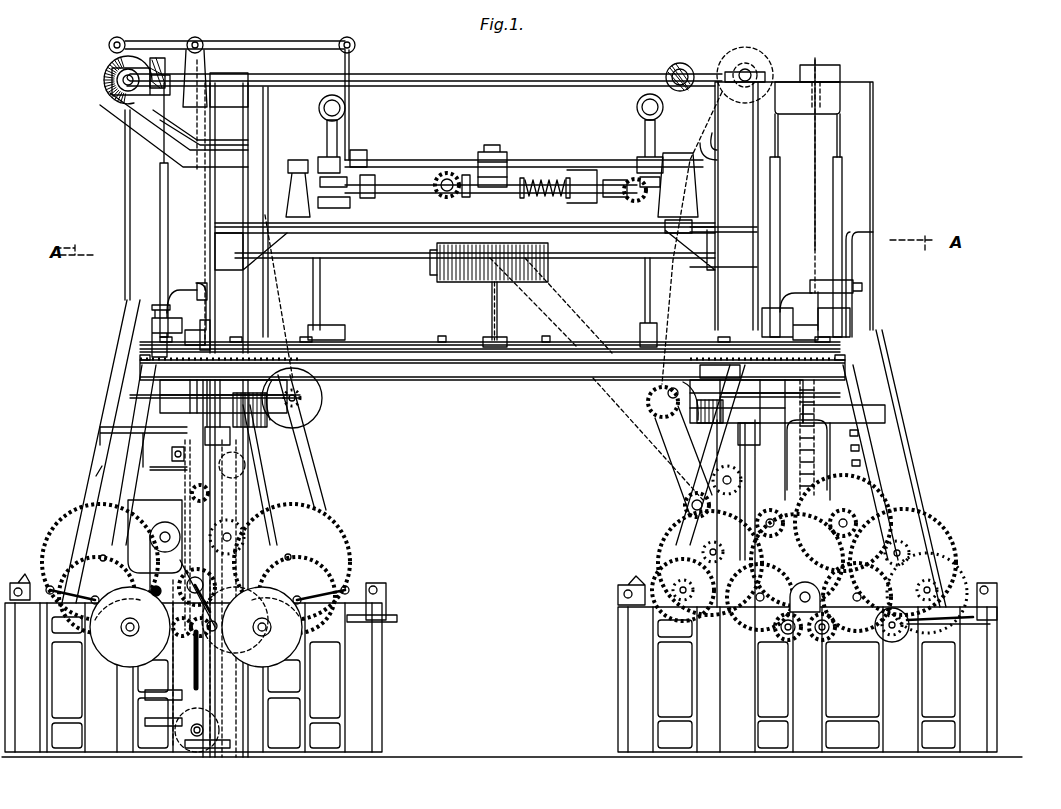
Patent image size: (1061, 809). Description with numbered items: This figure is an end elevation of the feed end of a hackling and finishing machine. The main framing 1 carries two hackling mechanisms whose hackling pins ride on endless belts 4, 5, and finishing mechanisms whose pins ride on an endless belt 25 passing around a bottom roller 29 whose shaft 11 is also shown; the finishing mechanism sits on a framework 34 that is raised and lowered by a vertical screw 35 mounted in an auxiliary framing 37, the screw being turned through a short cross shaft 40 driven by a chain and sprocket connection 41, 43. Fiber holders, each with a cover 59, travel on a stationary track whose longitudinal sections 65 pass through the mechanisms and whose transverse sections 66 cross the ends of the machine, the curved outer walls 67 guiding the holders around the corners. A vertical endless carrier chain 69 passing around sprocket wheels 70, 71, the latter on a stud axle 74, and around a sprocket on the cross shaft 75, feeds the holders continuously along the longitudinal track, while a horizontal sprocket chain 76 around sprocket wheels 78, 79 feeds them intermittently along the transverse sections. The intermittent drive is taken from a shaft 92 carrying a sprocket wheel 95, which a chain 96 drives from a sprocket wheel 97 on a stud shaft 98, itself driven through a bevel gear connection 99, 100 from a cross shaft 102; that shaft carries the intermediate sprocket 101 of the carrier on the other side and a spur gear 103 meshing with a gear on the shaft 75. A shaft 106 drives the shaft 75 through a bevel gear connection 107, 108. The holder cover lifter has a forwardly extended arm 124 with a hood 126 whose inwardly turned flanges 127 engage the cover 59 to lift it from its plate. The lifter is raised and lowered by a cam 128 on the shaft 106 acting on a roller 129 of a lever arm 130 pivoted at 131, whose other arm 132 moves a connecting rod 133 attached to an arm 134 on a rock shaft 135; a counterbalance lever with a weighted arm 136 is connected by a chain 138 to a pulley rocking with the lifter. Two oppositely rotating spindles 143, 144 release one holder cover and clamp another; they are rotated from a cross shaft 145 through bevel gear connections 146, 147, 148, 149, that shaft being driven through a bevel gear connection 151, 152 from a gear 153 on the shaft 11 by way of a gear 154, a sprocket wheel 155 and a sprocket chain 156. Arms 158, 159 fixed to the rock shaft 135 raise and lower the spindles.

The main framing 1 is at (97, 474).
The endless belt 4 is at (172, 453).
The endless belt 5 is at (860, 440).
The shaft of bottom roller 11 is at (771, 518).
The endless belt 25 is at (202, 535).
The bottom roller 29 is at (153, 532).
The framework 34 is at (165, 695).
The vertical screw 35 is at (200, 660).
The auxiliary framing 37 is at (172, 724).
The cross shaft 40 is at (205, 732).
The chain 41 is at (180, 676).
The sprocket 43 is at (195, 730).
The cover 59 is at (378, 338).
The longitudinal track section 65 is at (152, 330).
The transverse track section 66 is at (500, 363).
The curved outer wall 67 is at (140, 361).
The chain 69 is at (205, 258).
The sprocket wheel 70 is at (198, 288).
The sprocket wheel 71 is at (815, 288).
The stud axle 74 is at (862, 290).
The cross shaft 75 is at (545, 74).
The sprocket chain 76 is at (728, 372).
The sprocket wheel 78 is at (223, 411).
The sprocket wheel 79 is at (746, 411).
The shaft 92 is at (312, 405).
The sprocket wheel 95 is at (310, 418).
The chain 96 is at (275, 290).
The sprocket wheel 97 is at (748, 68).
The stud shaft 98 is at (752, 74).
The bevel gear 99 is at (742, 47).
The bevel gear 100 is at (722, 62).
The intermediate sprocket 101 is at (818, 64).
The cross shaft 102 is at (668, 77).
The spur gear 103 is at (680, 63).
The shaft 106 is at (115, 100).
The bevel gear 107 is at (104, 66).
The bevel gear 108 is at (160, 58).
The forwardly extended arm 124 is at (492, 305).
The hood 126 is at (492, 262).
The inwardly turned flanges 127 is at (437, 258).
The cam 128 is at (120, 80).
The roller 129 is at (110, 42).
The lever arm 130 is at (125, 38).
The pivot 131 is at (200, 38).
The lever arm 132 is at (255, 32).
The connecting rod 133 is at (345, 62).
The arm 134 is at (378, 136).
The rock shaft 135 is at (552, 153).
The weighted arm 136 is at (494, 146).
The chain 138 is at (492, 296).
The spindle 143 is at (328, 290).
The spindle 144 is at (645, 290).
The cross shaft 145 is at (400, 193).
The bevel gear 146 is at (320, 226).
The bevel gear 147 is at (376, 185).
The bevel gear 148 is at (645, 222).
The bevel gear 149 is at (620, 180).
The bevel gear 151 is at (466, 175).
The bevel gear 152 is at (445, 172).
The gear 153 is at (797, 560).
The gear 154 is at (685, 505).
The sprocket wheel 155 is at (667, 464).
The sprocket chain 156 is at (655, 450).
The arm 158 is at (318, 170).
The arm 159 is at (672, 160).